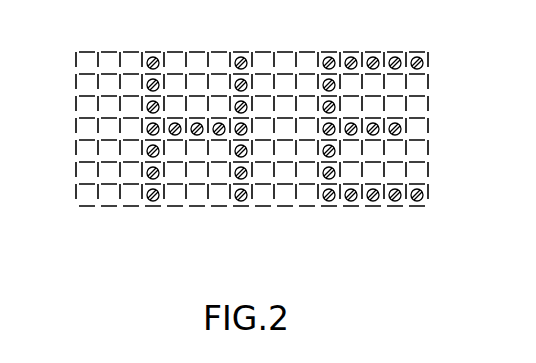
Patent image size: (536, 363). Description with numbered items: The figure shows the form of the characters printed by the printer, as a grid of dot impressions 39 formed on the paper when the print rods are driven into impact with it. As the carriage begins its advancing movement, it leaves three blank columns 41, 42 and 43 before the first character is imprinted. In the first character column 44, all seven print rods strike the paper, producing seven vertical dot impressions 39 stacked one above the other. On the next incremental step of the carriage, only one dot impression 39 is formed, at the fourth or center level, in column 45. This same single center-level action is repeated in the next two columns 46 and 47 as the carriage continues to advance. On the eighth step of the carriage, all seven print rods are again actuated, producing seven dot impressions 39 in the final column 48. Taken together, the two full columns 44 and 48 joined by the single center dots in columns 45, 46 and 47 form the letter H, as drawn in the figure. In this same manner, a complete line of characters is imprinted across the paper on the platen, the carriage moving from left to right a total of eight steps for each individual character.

The dot impressions 39 is at (243, 56).
The blank column 41 is at (82, 208).
The blank column 42 is at (108, 208).
The blank column 43 is at (127, 208).
The first character column 44 is at (147, 208).
The column 45 is at (168, 208).
The column 46 is at (200, 208).
The column 47 is at (217, 208).
The final column 48 is at (247, 208).